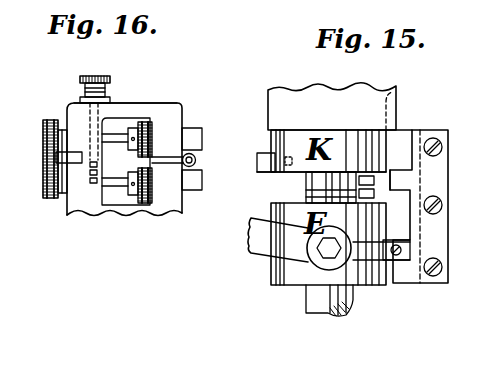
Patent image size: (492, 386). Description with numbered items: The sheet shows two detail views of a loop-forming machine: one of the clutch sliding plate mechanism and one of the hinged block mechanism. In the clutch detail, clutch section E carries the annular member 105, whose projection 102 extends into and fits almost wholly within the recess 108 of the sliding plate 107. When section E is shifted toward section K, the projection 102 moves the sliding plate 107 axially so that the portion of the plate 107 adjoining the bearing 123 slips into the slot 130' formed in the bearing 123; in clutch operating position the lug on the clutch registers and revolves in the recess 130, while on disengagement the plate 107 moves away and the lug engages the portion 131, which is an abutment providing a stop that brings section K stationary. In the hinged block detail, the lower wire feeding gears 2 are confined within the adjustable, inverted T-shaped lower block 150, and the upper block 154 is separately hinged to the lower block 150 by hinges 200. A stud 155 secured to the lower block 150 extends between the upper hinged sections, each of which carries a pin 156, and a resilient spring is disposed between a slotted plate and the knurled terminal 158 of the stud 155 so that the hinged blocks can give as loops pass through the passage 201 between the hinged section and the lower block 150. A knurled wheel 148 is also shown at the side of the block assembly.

In FIG. 16, the wire feeding gears 2 is at (170, 124).
In FIG. 16, the knurled wheel 148 is at (45, 125).
In FIG. 16, the lower block 150 is at (82, 198).
In FIG. 16, the upper hinged block 154 is at (202, 120).
In FIG. 16, the stud 155 is at (140, 102).
In FIG. 16, the pin 156 is at (110, 100).
In FIG. 16, the knurled terminal 158 is at (102, 76).
In FIG. 16, the hinges 200 is at (196, 158).
In FIG. 16, the passage 201 is at (70, 152).
In FIG. 15, the projection 102 is at (398, 262).
In FIG. 15, the annular member 105 is at (366, 262).
In FIG. 15, the sliding plate 107 is at (388, 200).
In FIG. 15, the recess 108 is at (430, 193).
In FIG. 15, the bearing 123 is at (305, 105).
In FIG. 15, the recess 130 is at (439, 167).
In FIG. 15, the slot 130' is at (418, 105).
In FIG. 15, the abutment portion 131 is at (398, 142).